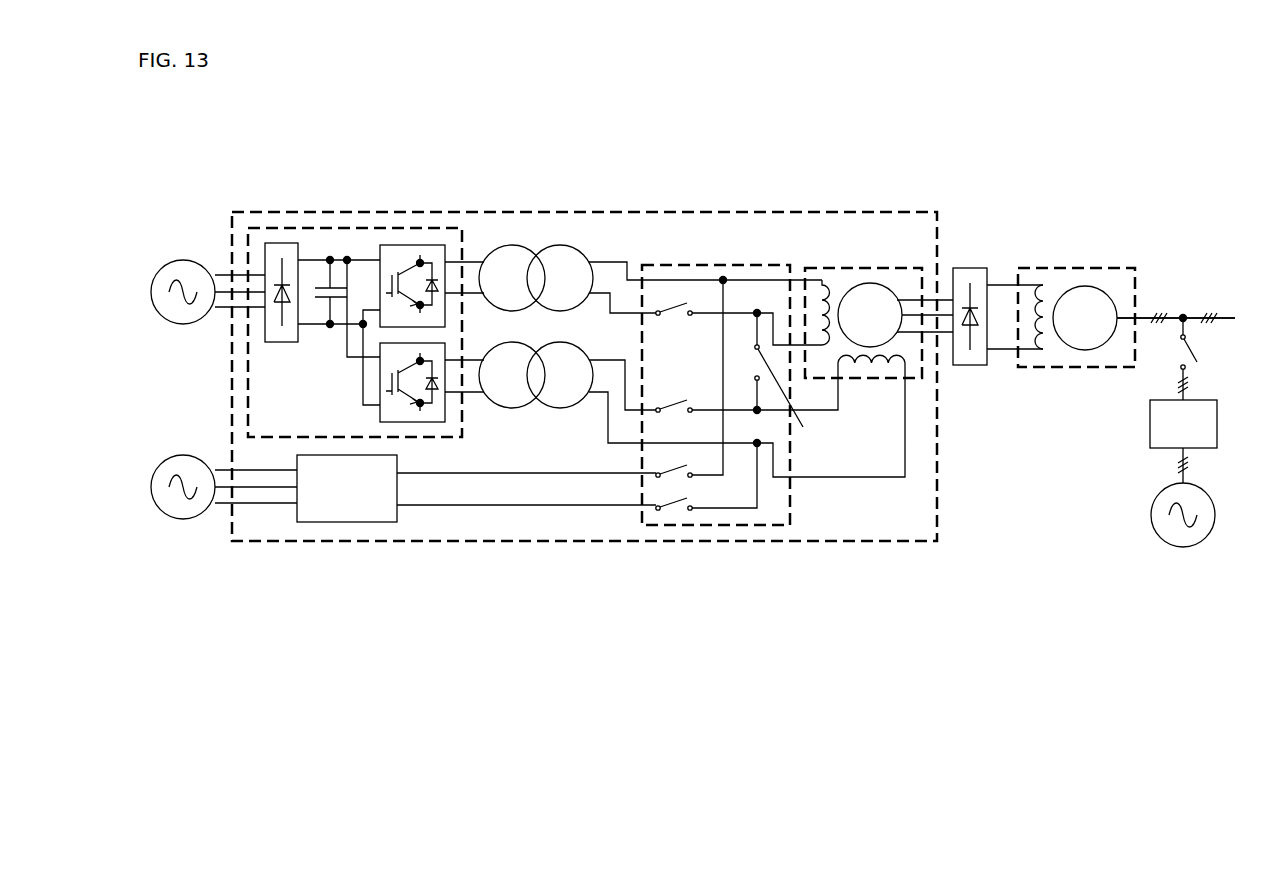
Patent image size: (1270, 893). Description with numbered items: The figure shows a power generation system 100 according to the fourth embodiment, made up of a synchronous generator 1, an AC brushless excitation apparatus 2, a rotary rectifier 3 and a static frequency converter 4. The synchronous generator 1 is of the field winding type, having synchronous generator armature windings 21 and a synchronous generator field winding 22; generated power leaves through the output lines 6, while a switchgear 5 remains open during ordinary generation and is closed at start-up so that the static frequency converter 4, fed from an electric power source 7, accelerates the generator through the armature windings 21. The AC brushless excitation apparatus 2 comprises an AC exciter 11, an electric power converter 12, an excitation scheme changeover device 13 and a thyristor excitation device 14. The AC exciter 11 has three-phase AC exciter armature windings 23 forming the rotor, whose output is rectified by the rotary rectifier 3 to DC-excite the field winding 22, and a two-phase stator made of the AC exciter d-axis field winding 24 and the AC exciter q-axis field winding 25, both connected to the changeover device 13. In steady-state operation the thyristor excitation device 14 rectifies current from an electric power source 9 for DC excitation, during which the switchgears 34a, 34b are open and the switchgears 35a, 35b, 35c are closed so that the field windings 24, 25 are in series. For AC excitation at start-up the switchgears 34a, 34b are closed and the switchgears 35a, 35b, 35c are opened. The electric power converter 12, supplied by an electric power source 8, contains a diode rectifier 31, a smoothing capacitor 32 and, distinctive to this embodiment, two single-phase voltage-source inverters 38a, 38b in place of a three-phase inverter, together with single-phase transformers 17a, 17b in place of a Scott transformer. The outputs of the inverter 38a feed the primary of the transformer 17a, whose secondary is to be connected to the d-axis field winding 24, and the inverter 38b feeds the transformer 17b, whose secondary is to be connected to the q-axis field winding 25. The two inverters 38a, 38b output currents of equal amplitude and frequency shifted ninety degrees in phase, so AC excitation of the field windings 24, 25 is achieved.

The power generation system 100 is at (288, 173).
The AC brushless excitation apparatus 2 is at (647, 212).
The electric power converter 12 is at (463, 247).
The excitation scheme changeover device 13 is at (680, 264).
The AC exciter 11 is at (840, 266).
The synchronous generator 1 is at (1055, 268).
The diode rectifier 31 is at (265, 258).
The smoothing capacitor 32 is at (314, 287).
The single-phase voltage-source inverter 38a is at (397, 244).
The single-phase voltage-source inverter 38b is at (410, 422).
The single-phase transformer 17a is at (588, 248).
The single-phase transformer 17b is at (520, 347).
The switchgear 34a is at (684, 321).
The switchgear 34b is at (688, 400).
The switchgear 35a is at (670, 467).
The switchgear 35b is at (670, 501).
The switchgear 35c is at (803, 428).
The thyristor excitation device 14 is at (363, 522).
The electric power source 8 is at (180, 324).
The electric power source 9 is at (197, 455).
The AC exciter d-axis field winding 24 is at (836, 266).
The AC exciter armature windings 23 is at (890, 288).
The AC exciter q-axis field winding 25 is at (903, 363).
The rotary rectifier 3 is at (987, 267).
The synchronous generator field winding 22 is at (1043, 350).
The synchronous generator armature windings 21 is at (1085, 350).
The output lines 6 is at (1235, 318).
The switchgear 5 is at (1197, 357).
The static frequency converter 4 is at (1150, 432).
The electric power source 7 is at (1152, 498).